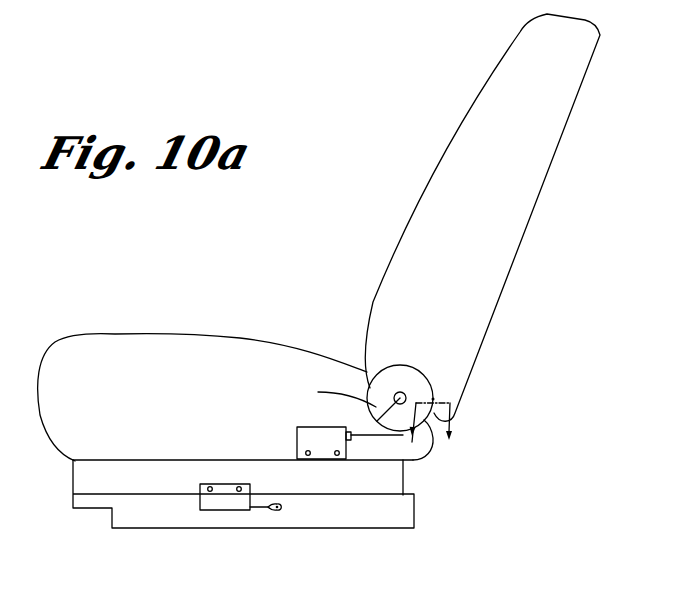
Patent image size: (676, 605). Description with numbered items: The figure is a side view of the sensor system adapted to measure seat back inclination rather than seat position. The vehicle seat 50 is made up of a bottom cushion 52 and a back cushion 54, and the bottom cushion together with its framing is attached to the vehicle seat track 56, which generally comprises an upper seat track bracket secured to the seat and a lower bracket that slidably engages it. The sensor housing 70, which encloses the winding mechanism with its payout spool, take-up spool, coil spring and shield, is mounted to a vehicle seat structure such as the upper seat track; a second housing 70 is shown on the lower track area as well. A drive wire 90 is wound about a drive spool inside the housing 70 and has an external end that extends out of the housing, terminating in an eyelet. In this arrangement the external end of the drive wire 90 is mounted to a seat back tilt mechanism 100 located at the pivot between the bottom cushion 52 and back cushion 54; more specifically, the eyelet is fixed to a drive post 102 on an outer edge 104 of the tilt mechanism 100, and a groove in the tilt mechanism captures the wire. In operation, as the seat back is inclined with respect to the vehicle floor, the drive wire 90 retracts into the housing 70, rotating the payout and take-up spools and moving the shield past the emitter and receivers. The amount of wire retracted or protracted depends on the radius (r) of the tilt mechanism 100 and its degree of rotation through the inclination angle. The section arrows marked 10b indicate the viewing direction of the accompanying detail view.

The vehicle seat 50 is at (312, 278).
The bottom cushion 52 is at (188, 367).
The back cushion 54 is at (433, 207).
The vehicle seat track 56 is at (95, 529).
The housing 70 is at (347, 448).
The drive wire 90 is at (383, 442).
The seat back tilt mechanism 100 is at (407, 383).
The drive post 102 is at (438, 397).
The outer edge 104 is at (436, 385).
The section view indicator 10b is at (439, 437).